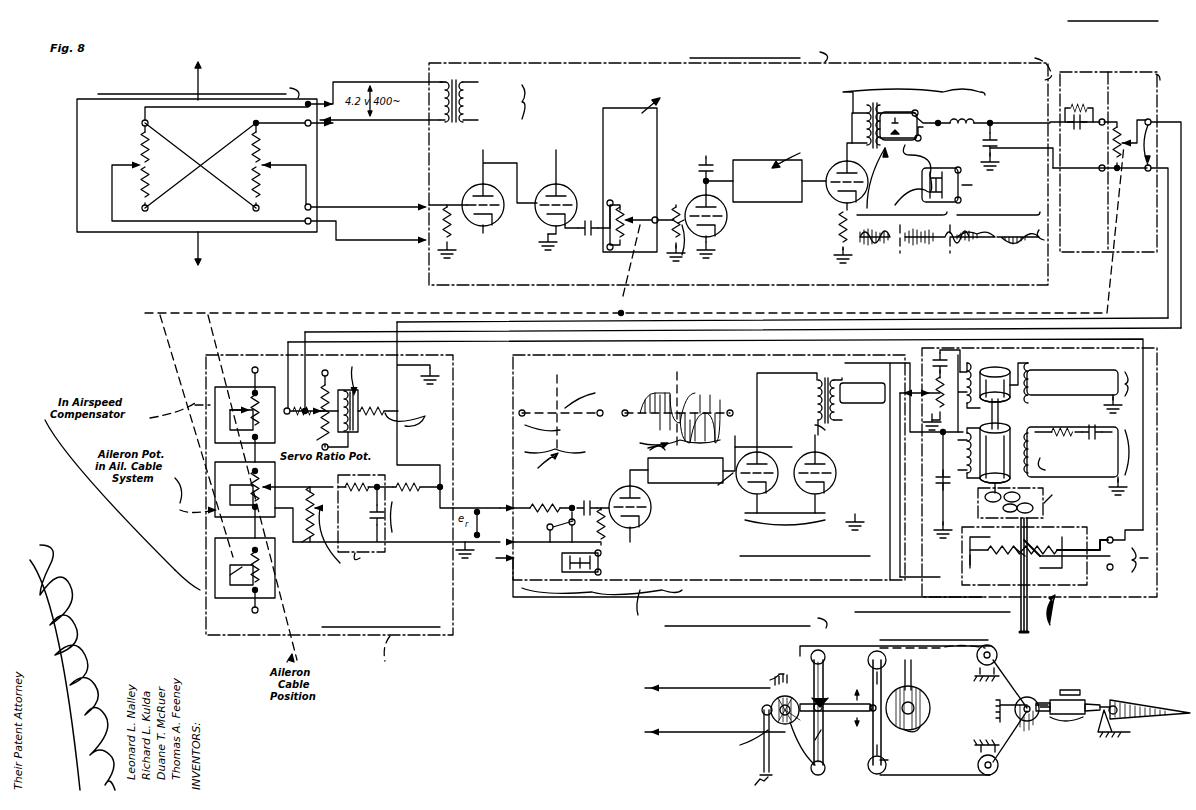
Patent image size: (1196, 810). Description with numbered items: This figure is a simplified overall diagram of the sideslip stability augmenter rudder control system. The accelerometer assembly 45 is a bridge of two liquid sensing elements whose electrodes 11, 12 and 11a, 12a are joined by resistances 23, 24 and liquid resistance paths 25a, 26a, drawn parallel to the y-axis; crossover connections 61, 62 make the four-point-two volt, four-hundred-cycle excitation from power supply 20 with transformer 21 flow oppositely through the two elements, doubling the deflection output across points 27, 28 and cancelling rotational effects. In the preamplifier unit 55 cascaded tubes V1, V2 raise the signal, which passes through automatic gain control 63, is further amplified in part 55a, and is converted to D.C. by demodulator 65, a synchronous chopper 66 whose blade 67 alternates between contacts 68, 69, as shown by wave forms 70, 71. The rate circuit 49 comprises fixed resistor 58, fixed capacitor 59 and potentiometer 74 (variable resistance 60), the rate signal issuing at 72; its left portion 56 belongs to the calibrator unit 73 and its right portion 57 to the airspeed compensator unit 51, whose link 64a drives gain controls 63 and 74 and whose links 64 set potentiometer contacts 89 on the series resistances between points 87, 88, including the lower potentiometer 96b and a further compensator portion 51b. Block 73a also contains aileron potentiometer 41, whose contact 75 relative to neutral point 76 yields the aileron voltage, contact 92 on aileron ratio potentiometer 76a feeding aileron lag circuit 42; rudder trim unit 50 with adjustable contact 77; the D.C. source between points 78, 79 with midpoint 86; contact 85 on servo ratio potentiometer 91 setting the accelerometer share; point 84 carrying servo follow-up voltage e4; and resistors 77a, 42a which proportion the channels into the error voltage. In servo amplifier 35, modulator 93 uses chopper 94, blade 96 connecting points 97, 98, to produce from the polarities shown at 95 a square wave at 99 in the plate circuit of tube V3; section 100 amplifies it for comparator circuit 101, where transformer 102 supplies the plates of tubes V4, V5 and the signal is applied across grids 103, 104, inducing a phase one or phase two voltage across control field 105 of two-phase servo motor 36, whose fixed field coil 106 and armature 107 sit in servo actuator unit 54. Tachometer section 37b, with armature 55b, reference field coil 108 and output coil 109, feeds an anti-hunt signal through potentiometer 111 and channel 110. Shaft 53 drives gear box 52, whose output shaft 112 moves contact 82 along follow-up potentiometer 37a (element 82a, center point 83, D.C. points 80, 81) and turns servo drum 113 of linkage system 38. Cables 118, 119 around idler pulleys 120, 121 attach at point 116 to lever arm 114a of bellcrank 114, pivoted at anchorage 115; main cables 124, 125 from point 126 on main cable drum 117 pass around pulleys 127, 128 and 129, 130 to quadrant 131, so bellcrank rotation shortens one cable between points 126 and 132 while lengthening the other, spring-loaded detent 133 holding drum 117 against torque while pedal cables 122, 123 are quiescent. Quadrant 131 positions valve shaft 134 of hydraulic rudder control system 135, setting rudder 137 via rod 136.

The accelerometer assembly 45 is at (77, 134).
The electrode 12 is at (142, 123).
The electrode 12a is at (258, 123).
The electrode 11 is at (148, 208).
The electrode 11a is at (259, 208).
The connection 61 is at (165, 140).
The connection 62 is at (252, 123).
The resistance 24 is at (152, 143).
The resistance 23 is at (152, 171).
The resistance path 26a is at (248, 155).
The resistance path 25a is at (242, 184).
The output point 27 is at (137, 165).
The output point 28 is at (269, 165).
The power supply 20 is at (501, 102).
The transformer 21 is at (470, 130).
The tube V1 is at (483, 204).
The tube V2 is at (572, 200).
The airspeed compensator unit 51 is at (672, 112).
The automatic gain control 63 is at (634, 206).
The preamplifier unit 55 is at (881, 62).
The amplifier part 55a is at (768, 202).
The demodulator 65 is at (931, 77).
The contact 69 is at (915, 111).
The contact 68 is at (918, 141).
The blade 67 is at (938, 123).
The synchronous converter 66 is at (947, 169).
The wave form 70 is at (955, 194).
The wave form 71 is at (946, 212).
The rate circuit 49 is at (1070, 22).
The left hand portion 56 is at (1035, 61).
The right hand portion 57 is at (1164, 67).
The fixed value resistor 58 is at (1080, 105).
The fixed value capacitor 59 is at (1095, 126).
The variable resistance 60 is at (1105, 152).
The potentiometer 74 is at (1128, 108).
The rate signal output 72 is at (1154, 153).
The link 64a is at (278, 314).
The links 64 is at (202, 340).
The calibrator unit 73 is at (329, 495).
The calibrator block 73a is at (395, 653).
The airspeed compensator 51b is at (187, 398).
The aileron potentiometer 41 is at (186, 511).
The point 87 is at (252, 370).
The potentiometer contact 89 is at (236, 408).
The point 84 is at (285, 405).
The servo ratio potentiometer 91 is at (298, 427).
The point 78 is at (323, 373).
The contact 85 is at (308, 407).
The point 79 is at (322, 448).
The midway point 86 is at (355, 432).
The adjustable contact 77 is at (362, 408).
The resistor 77a is at (380, 404).
The rudder trim unit 50 is at (359, 379).
The neutral point 76 is at (250, 487).
The potentiometer contact 75 is at (270, 486).
The contact 92 is at (321, 497).
The aileron ratio potentiometer 76a is at (330, 558).
The aileron lag circuit 42 is at (360, 555).
The resistor 42a is at (405, 493).
The potentiometer 96b is at (245, 572).
The point 88 is at (252, 609).
The servo amplifier 35 is at (709, 467).
The phase designation 95 is at (560, 419).
The square wave illustration 99 is at (644, 445).
The point 97 is at (546, 527).
The point 98 is at (593, 517).
The blade 96 is at (586, 529).
The tube V3 is at (625, 500).
The amplifier section 100 is at (690, 483).
The tube V4 is at (776, 443).
The grid 103 is at (728, 486).
The tube V5 is at (825, 480).
The comparator circuit 101 is at (804, 523).
The transformer 102 is at (820, 420).
The grid 104 is at (821, 439).
The synchronous converter 94 is at (739, 573).
The modulator 93 is at (602, 609).
The servo actuator unit 54 is at (1006, 480).
The potentiometer 111 is at (938, 380).
The channel 110 is at (907, 488).
The output coil 109 is at (967, 368).
The conductor 55b is at (1018, 377).
The reference field coil 108 is at (1050, 376).
The tachometer section 37b is at (1136, 378).
The armature 107 is at (1008, 427).
The control field 105 is at (968, 434).
The two-phase servo motor 36 is at (1138, 448).
The fixed field coil 106 is at (1057, 466).
The gear box 52 is at (1037, 503).
The servomotor shaft 53 is at (1001, 510).
The servo follow-up voltage e4 is at (1143, 484).
The servo shaft position follow-up potentiometer 37a is at (1062, 588).
The contact 82 is at (1048, 544).
The center point 83 is at (1013, 564).
The potentiometer element 82a is at (1037, 565).
The point 80 is at (1110, 537).
The point 81 is at (1123, 573).
The output shaft 112 is at (1028, 630).
The linkage system 38 is at (746, 626).
The pulley 127 is at (803, 646).
The cable 122 is at (702, 690).
The cable 123 is at (678, 742).
The main cable drum 117 is at (775, 688).
The spring loaded detent 133 is at (744, 729).
The point 126 is at (767, 752).
The pulley 128 is at (815, 774).
The bellcrank 114 is at (822, 664).
The lever arm 114a is at (822, 748).
The stationary anchorage point 115 is at (832, 702).
The point 116 is at (855, 715).
The cable 119 is at (884, 658).
The servo drum 113 is at (929, 695).
The cable 118 is at (887, 732).
The idler pulley 121 is at (889, 762).
The main cable 125 is at (916, 775).
The idler pulley 120 is at (885, 640).
The main cable 124 is at (930, 643).
The pulley 129 is at (997, 653).
The pulley 130 is at (995, 770).
The quadrant 131 is at (1020, 693).
The point 132 is at (1037, 718).
The valve shaft 134 is at (1067, 690).
The hydraulic rudder control system 135 is at (1066, 720).
The rod 136 is at (1107, 718).
The rudder 137 is at (1150, 701).